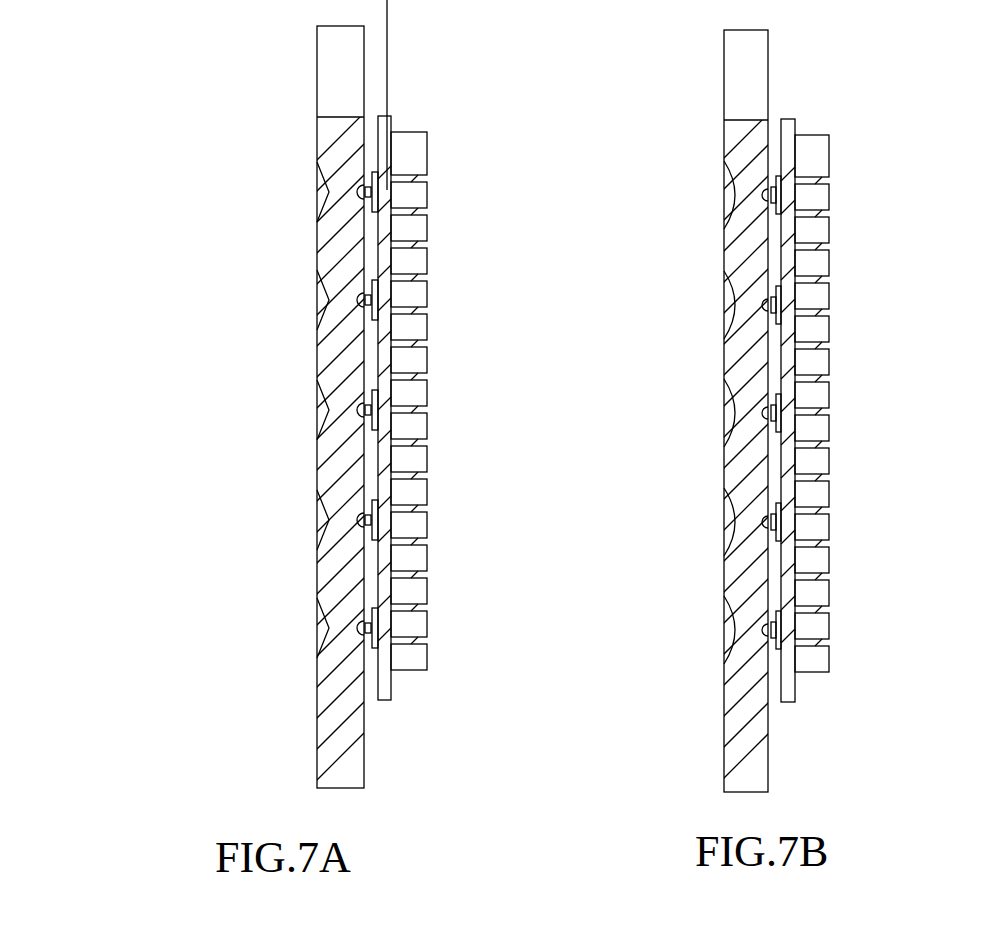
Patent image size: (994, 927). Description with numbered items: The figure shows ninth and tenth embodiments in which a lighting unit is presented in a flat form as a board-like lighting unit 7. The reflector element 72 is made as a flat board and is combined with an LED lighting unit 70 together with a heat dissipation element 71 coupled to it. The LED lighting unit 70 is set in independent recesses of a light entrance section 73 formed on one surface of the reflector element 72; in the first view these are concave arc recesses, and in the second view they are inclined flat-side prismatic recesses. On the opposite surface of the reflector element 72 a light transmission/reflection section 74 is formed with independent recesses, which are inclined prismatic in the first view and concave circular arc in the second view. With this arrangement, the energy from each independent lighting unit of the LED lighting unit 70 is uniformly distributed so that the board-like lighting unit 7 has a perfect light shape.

In FIG. 7A, the board-like lighting unit 7 is at (277, 567).
In FIG. 7B, the board-like lighting unit 7 is at (853, 360).
In FIG. 7A, the LED lighting unit 70 is at (367, 413).
In FIG. 7B, the LED lighting unit 70 is at (772, 413).
In FIG. 7B, the heat dissipation element 71 is at (787, 225).
In FIG. 7A, the reflector element 72 is at (339, 145).
In FIG. 7B, the reflector element 72 is at (750, 147).
In FIG. 7A, the light entrance section 73 is at (358, 300).
In FIG. 7B, the light entrance section 73 is at (767, 192).
In FIG. 7A, the light transmission/reflection section 74 is at (320, 210).
In FIG. 7B, the light transmission/reflection section 74 is at (735, 305).